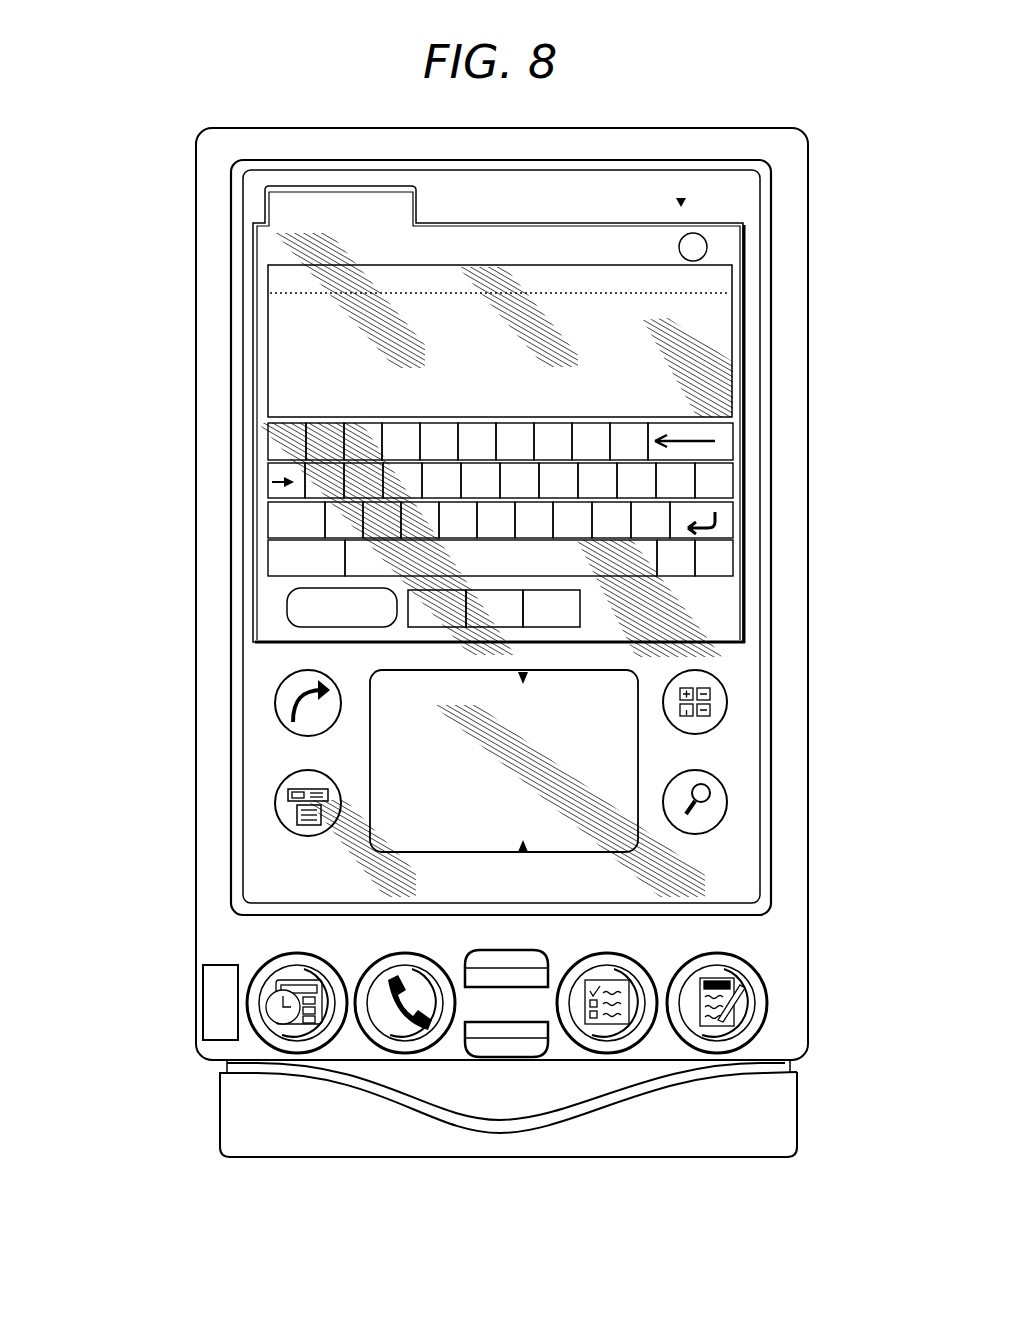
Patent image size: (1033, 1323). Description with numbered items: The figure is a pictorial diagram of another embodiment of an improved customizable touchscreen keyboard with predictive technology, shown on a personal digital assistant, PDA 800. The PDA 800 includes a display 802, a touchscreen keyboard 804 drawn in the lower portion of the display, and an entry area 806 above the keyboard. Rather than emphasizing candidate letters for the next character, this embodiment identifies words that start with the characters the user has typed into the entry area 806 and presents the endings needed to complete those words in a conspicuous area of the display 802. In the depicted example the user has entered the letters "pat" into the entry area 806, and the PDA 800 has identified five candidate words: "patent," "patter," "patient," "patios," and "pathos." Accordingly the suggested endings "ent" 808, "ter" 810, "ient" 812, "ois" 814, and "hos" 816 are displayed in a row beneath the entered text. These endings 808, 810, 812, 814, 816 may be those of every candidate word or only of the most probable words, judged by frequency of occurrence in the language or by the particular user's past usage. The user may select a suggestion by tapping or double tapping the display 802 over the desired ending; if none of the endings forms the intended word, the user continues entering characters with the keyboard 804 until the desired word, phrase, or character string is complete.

The PDA 800 is at (106, 59).
The display 802 is at (720, 322).
The touchscreen keyboard 804 is at (632, 425).
The entry area 806 is at (280, 256).
The ending "ent" 808 is at (292, 328).
The ending "ter" 810 is at (350, 328).
The ending "ient" 812 is at (412, 328).
The ending "ois" 814 is at (477, 328).
The ending "hos" 816 is at (540, 328).